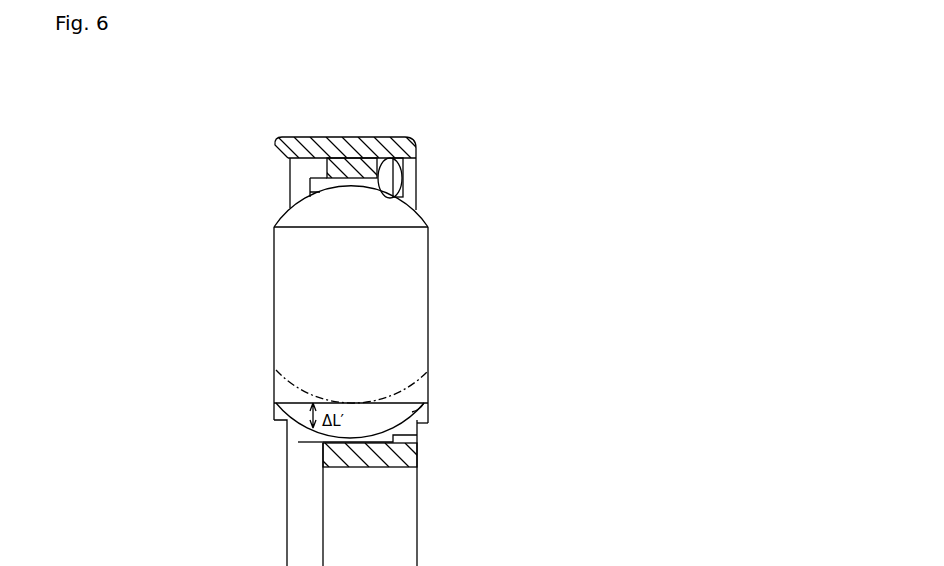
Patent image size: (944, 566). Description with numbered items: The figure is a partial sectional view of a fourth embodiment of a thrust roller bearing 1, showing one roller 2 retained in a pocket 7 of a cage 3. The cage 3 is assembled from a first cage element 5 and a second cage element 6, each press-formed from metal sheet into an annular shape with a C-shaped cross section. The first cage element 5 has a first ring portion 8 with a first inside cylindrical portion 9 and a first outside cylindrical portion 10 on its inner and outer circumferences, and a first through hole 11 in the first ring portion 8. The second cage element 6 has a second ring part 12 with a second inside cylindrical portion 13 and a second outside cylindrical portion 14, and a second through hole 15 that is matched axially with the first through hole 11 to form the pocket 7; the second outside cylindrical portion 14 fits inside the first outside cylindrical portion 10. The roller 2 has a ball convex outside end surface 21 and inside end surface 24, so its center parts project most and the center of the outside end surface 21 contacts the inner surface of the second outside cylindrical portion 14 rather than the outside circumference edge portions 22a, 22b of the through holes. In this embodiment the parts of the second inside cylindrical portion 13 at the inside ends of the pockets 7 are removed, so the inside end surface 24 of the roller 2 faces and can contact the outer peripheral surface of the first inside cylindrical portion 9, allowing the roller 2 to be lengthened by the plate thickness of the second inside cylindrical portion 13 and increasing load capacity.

The thrust roller bearing 1 is at (440, 248).
The roller 2 is at (407, 322).
The cage 3 is at (380, 133).
The first cage element 5 is at (403, 145).
The second cage element 6 is at (287, 432).
The pocket 7 is at (432, 386).
The first ring portion 8 is at (417, 422).
The first inside cylindrical portion 9 is at (362, 457).
The first outside cylindrical portion 10 is at (297, 137).
The first through hole 11 is at (412, 192).
The second ring part 12 is at (287, 425).
The second inside cylindrical portion 13 is at (305, 442).
The second outside cylindrical portion 14 is at (353, 165).
The second through hole 15 is at (420, 430).
The outside end surface 21 is at (320, 183).
The outside circumference edge portion 22a is at (407, 160).
The outside circumference edge portion 22b is at (320, 168).
The inside end surface 24 is at (415, 475).